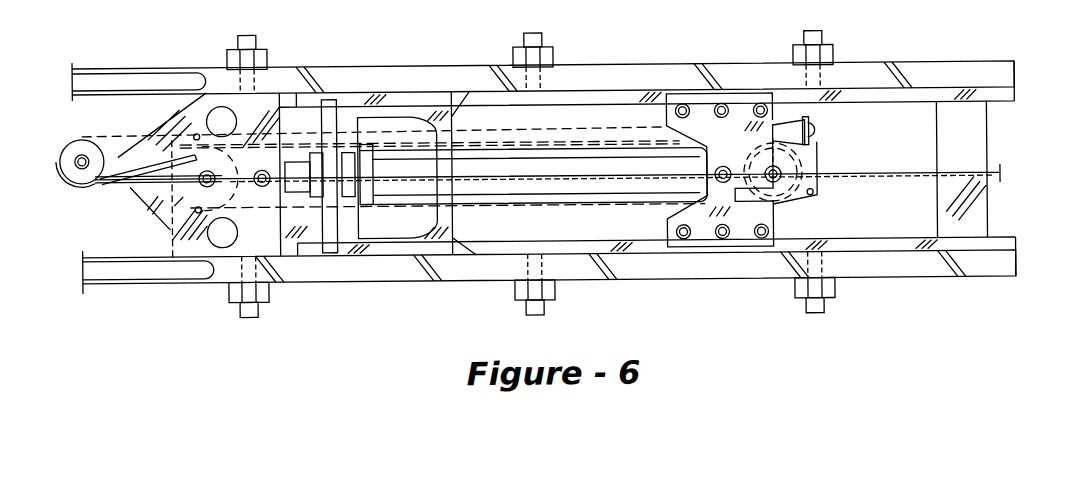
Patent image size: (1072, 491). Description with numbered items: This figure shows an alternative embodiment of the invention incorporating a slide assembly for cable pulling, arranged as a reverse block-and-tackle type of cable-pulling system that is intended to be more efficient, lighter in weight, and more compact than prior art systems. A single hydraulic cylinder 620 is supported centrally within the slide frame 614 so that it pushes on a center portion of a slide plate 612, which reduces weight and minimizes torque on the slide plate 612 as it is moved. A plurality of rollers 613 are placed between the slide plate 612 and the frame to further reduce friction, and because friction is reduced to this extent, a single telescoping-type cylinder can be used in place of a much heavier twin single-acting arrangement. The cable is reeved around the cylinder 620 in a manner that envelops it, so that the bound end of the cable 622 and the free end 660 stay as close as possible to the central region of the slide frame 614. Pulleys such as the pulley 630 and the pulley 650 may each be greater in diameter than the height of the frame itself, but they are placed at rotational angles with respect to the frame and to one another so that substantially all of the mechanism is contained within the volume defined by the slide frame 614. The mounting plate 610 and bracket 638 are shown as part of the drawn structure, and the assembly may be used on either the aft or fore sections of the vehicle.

The frame mounting plate 610 is at (250, 242).
The slide plate 612 is at (742, 110).
The rollers 613 is at (722, 106).
The slide frame 614 is at (349, 76).
The hydraulic cylinder 620 is at (600, 184).
The bound end of the cable 622 is at (821, 132).
The pulley 630 is at (172, 212).
The pulley bracket 638 is at (817, 179).
The pulley 650 is at (80, 138).
The free end of the cable 660 is at (1000, 168).